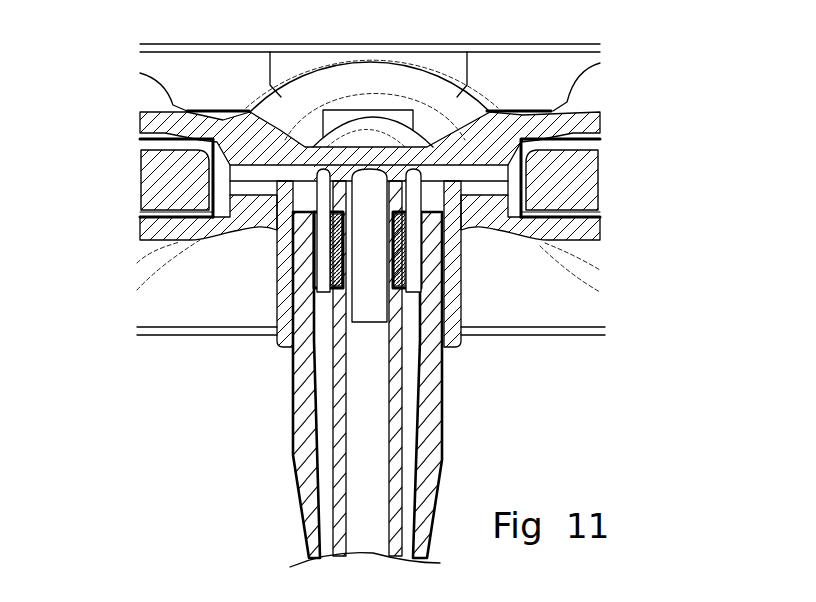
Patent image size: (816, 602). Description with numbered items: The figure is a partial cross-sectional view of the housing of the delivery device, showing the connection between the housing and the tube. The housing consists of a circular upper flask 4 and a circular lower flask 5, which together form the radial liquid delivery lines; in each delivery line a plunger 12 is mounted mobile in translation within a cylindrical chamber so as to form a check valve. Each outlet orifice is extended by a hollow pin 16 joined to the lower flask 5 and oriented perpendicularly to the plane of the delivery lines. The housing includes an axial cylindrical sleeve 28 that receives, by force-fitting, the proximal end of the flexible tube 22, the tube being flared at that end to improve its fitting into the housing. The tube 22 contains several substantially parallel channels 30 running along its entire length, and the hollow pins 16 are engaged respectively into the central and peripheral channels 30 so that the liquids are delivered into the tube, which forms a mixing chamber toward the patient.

The upper flask 4 is at (578, 43).
The plunger 12 is at (140, 190).
The lower flask 5 is at (600, 234).
The axial cylindrical sleeve 28 is at (457, 313).
The channels 30 is at (413, 445).
The flexible tube 22 is at (307, 510).
The hollow pin 16 is at (352, 317).